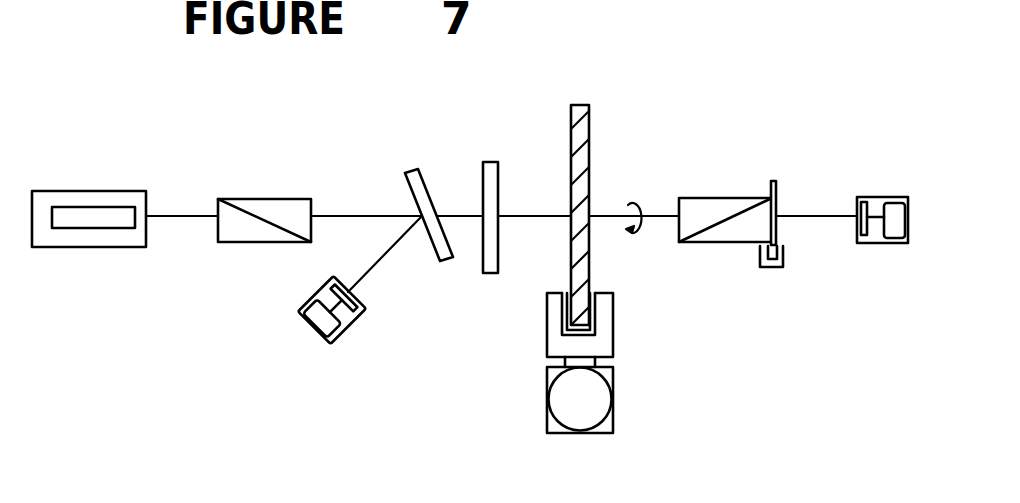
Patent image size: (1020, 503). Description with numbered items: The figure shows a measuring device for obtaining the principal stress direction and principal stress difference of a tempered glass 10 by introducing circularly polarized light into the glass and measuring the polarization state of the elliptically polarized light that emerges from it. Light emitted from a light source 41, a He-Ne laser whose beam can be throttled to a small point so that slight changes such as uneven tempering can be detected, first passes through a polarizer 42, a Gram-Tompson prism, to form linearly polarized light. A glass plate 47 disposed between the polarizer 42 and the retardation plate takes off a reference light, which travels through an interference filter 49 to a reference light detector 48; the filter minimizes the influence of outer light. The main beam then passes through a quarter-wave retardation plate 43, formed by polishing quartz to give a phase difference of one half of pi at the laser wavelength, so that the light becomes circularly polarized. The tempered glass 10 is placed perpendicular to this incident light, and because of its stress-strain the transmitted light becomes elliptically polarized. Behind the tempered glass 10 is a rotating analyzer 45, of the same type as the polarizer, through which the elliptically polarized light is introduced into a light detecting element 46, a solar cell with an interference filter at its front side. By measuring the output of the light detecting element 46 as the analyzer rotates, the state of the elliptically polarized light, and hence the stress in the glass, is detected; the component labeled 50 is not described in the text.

The tempered glass 10 is at (583, 105).
The light source 41 is at (95, 191).
The polarizer 42 is at (265, 199).
The ¼λ retardation plate 43 is at (493, 162).
The rotating analyzer 45 is at (717, 198).
The light detecting element 46 is at (873, 197).
The glass plate 47 is at (417, 168).
The reference light detector 48 is at (342, 317).
The interference filter 49 is at (355, 288).
The rotating holder / motor 50 is at (615, 403).